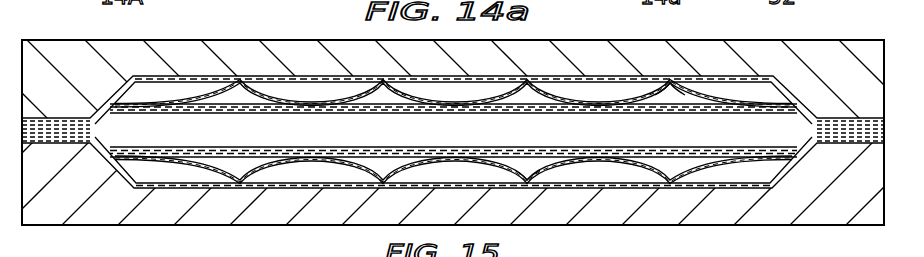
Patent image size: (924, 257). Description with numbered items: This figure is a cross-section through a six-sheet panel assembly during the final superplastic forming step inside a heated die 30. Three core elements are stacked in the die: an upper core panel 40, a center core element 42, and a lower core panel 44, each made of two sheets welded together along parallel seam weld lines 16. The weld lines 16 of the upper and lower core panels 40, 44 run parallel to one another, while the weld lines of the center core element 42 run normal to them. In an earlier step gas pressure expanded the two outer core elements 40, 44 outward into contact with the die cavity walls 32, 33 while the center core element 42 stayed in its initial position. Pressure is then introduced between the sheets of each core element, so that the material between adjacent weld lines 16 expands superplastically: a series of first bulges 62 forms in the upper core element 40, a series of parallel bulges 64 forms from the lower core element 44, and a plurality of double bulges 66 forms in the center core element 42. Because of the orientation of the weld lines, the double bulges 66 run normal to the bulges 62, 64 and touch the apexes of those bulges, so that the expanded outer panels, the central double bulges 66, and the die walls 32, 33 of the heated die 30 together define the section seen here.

The seam weld lines 16 is at (670, 88).
The heated die 30 is at (853, 50).
The die cavity wall 32 is at (183, 79).
The die cavity wall 33 is at (155, 188).
The upper core panel 40 is at (604, 72).
The center core element 42 is at (645, 128).
The lower core panel 44 is at (722, 188).
The first bulges 62 is at (277, 100).
The parallel bulges 64 is at (343, 160).
The double bulges 66 is at (453, 130).